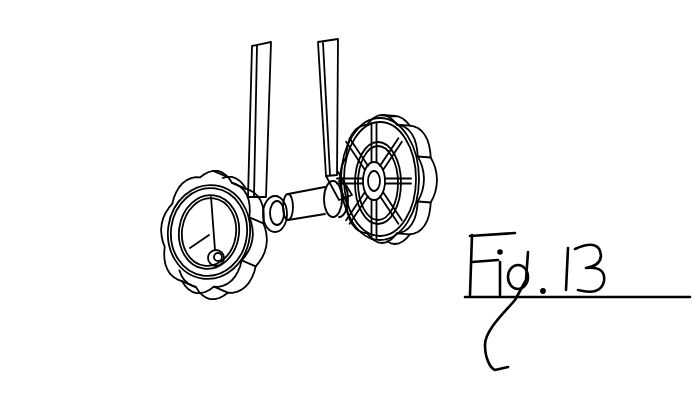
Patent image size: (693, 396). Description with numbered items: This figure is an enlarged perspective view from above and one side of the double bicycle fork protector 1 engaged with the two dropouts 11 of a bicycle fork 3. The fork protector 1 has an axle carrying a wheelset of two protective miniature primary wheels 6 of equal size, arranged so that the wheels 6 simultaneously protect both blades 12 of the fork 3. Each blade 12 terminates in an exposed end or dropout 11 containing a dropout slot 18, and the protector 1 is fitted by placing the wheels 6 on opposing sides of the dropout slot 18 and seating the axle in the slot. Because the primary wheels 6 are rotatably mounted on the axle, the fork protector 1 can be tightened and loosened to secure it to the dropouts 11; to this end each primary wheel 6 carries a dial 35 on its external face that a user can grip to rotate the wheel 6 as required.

The bicycle fork protector 1 is at (441, 163).
The bicycle fork 3 is at (251, 77).
The first wheel 6 is at (165, 202).
The dropout 11 is at (368, 213).
The blade 12 is at (250, 140).
The dropout slot 18 is at (338, 214).
The dial 35 is at (212, 241).